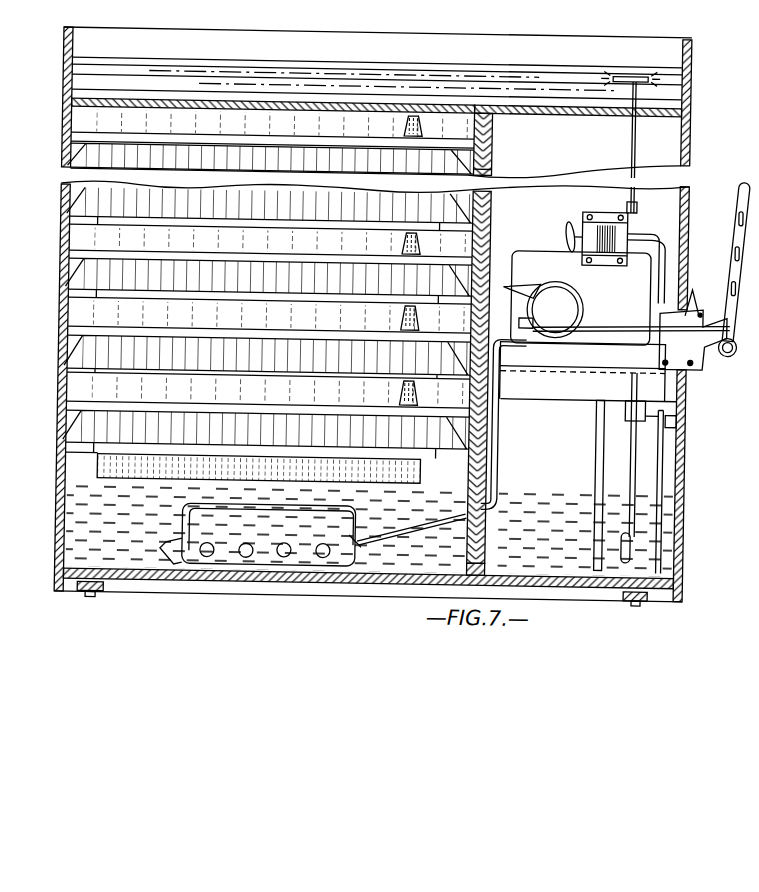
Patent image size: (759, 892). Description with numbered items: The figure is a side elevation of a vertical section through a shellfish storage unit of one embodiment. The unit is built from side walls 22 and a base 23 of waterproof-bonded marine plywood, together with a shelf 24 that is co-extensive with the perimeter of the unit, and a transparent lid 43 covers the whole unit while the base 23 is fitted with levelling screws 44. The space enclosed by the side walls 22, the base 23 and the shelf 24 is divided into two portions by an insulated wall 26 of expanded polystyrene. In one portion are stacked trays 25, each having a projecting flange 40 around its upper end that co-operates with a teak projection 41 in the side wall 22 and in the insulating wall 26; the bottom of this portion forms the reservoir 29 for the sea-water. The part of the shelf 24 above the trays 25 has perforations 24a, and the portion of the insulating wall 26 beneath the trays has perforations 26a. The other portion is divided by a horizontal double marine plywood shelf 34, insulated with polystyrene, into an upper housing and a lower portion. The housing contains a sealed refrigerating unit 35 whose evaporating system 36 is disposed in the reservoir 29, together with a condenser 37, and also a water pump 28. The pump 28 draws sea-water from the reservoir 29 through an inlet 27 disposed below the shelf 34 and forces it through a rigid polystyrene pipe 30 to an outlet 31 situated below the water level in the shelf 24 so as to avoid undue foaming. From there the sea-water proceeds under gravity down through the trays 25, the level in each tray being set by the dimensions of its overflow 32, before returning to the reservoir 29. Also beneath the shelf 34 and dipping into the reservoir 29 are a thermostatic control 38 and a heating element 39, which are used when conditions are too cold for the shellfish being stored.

The side wall 22 is at (74, 50).
The base 23 is at (694, 572).
The shelf 24 is at (670, 102).
The perforations 24a is at (188, 98).
The tray 25 is at (497, 197).
The insulated wall 26 is at (494, 153).
The perforations 26a is at (473, 560).
The inlet 27 is at (658, 245).
The water pump 28 is at (571, 225).
The reservoir 29 is at (588, 562).
The pipe 30 is at (633, 132).
The outlet 31 is at (684, 70).
The overflow 32 is at (422, 301).
The horizontal double marine plywood shelf 34 is at (636, 366).
The refrigerating unit 35 is at (601, 305).
The evaporating system 36 is at (245, 549).
The condenser 37 is at (746, 240).
The thermostatic control 38 is at (640, 436).
The heating element 39 is at (670, 497).
The projecting flange 40 is at (494, 134).
The teak projection 41 is at (500, 430).
The transparent lid 43 is at (613, 32).
The levelling screws 44 is at (110, 596).